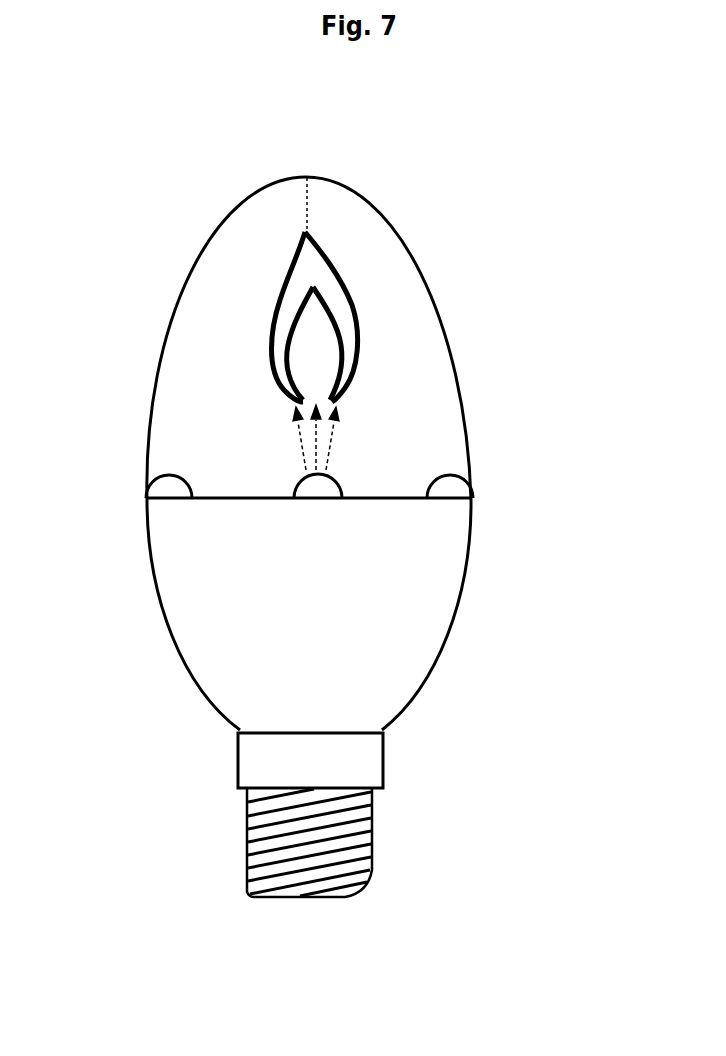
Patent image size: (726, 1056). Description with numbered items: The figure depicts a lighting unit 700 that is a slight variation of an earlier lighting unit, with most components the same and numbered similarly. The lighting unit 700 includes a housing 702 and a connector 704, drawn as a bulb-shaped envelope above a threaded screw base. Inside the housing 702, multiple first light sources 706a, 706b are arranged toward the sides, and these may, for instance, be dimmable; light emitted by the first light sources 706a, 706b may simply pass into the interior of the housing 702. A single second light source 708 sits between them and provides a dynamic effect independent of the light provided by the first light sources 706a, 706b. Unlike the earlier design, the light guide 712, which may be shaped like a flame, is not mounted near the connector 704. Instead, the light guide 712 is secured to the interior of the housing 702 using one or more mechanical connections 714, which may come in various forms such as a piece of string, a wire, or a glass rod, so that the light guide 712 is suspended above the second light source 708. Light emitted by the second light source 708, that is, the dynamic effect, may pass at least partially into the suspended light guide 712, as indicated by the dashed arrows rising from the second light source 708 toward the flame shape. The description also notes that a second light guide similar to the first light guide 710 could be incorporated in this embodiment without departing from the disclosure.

The lighting unit 700 is at (385, 159).
The housing 702 is at (438, 287).
The connector 704 is at (373, 860).
The first light source 706a is at (157, 478).
The first light source 706b is at (453, 474).
The second light source 708 is at (314, 493).
The first light guide 710 is at (440, 378).
The light guide 712 is at (277, 307).
The mechanical connection 714 is at (310, 200).